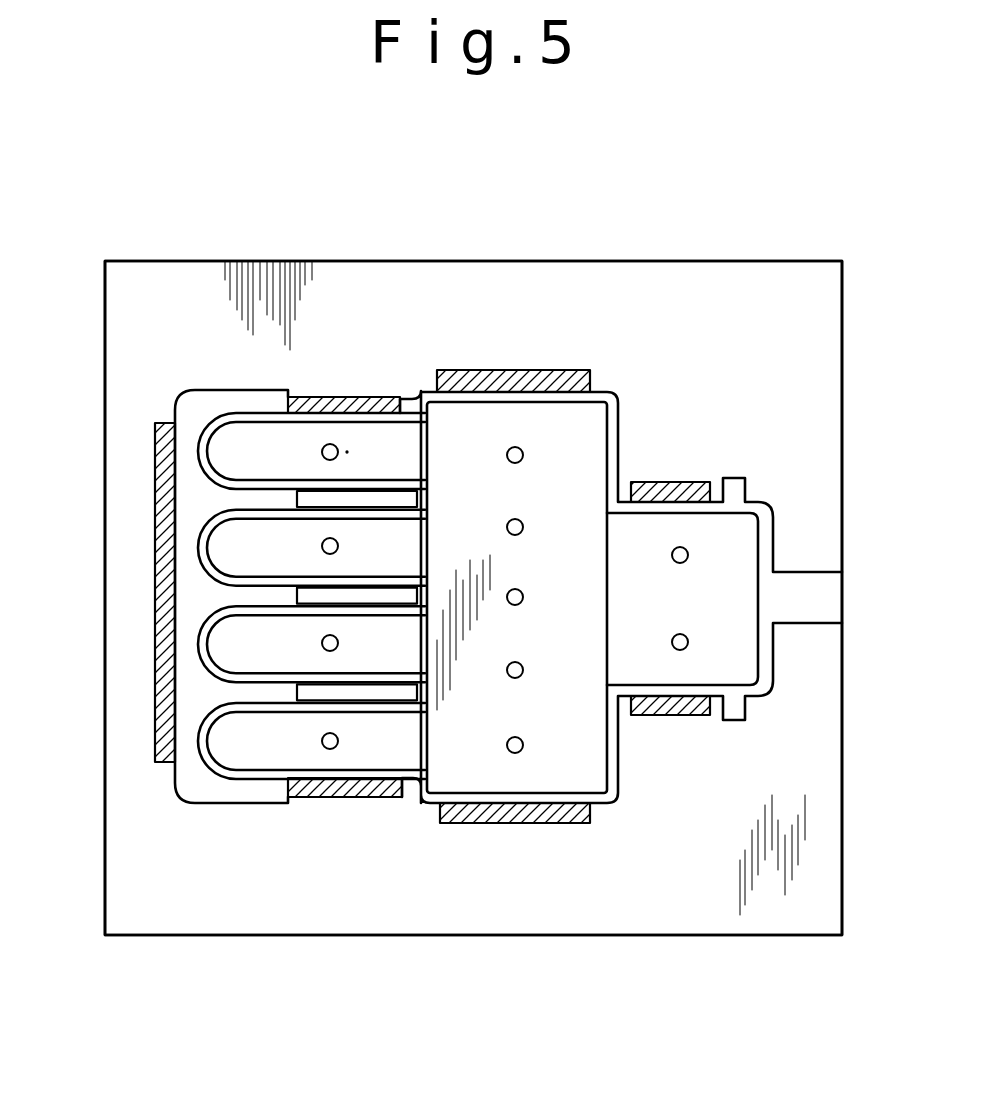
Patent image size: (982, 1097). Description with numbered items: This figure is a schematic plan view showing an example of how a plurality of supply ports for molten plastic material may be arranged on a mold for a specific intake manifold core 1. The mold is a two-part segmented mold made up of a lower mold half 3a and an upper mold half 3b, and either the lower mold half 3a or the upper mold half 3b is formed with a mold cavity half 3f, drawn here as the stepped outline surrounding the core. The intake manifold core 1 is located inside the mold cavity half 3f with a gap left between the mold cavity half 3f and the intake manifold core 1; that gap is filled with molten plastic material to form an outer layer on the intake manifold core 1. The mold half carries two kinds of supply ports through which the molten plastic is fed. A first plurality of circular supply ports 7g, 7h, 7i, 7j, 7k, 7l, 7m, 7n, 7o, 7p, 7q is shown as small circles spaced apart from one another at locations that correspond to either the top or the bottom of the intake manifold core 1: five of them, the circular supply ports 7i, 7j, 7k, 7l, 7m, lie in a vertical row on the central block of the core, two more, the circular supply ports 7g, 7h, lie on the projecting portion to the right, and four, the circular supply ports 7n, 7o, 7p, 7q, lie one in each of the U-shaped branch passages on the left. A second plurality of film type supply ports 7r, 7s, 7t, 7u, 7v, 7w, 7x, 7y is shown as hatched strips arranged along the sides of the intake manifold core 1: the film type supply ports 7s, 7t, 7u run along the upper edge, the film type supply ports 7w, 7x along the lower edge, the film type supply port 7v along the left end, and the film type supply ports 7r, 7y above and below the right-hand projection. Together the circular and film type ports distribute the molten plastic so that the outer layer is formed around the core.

The intake manifold core 1 is at (511, 782).
The lower mold half 3a is at (552, 279).
The upper mold half 3b is at (473, 598).
The mold cavity half 3f is at (606, 392).
The circular supply port 7g is at (688, 558).
The circular supply port 7h is at (688, 645).
The circular supply port 7i is at (523, 455).
The circular supply port 7j is at (523, 527).
The circular supply port 7k is at (523, 597).
The circular supply port 7l is at (523, 670).
The circular supply port 7m is at (523, 745).
The circular supply port 7n is at (321, 452).
The circular supply port 7o is at (321, 547).
The circular supply port 7p is at (321, 644).
The circular supply port 7q is at (321, 742).
The film type supply port 7r is at (665, 485).
The film type supply port 7s is at (479, 369).
The film type supply port 7t is at (340, 396).
The film type supply port 7u is at (210, 389).
The film type supply port 7v is at (155, 501).
The film type supply port 7w is at (347, 798).
The film type supply port 7x is at (477, 815).
The film type supply port 7y is at (685, 716).